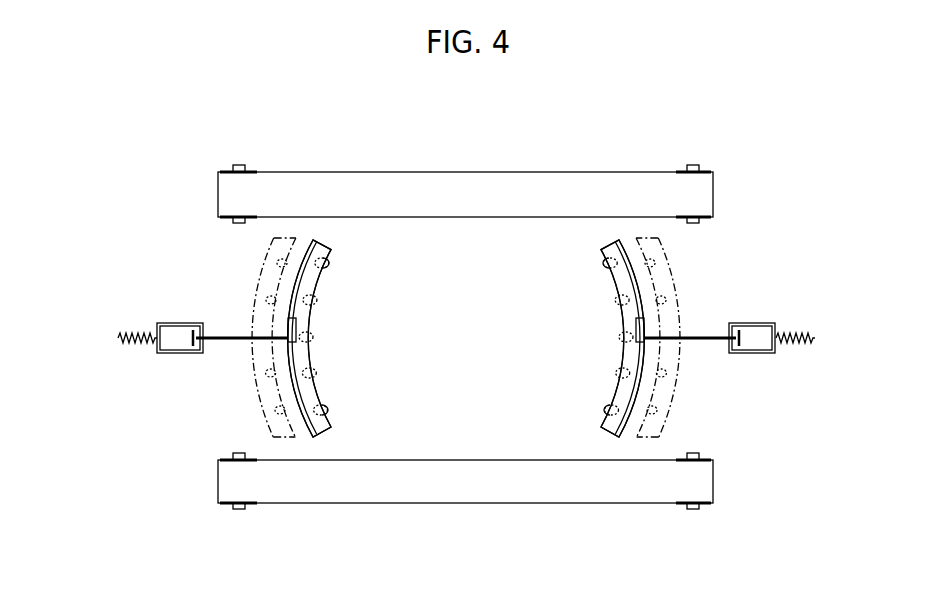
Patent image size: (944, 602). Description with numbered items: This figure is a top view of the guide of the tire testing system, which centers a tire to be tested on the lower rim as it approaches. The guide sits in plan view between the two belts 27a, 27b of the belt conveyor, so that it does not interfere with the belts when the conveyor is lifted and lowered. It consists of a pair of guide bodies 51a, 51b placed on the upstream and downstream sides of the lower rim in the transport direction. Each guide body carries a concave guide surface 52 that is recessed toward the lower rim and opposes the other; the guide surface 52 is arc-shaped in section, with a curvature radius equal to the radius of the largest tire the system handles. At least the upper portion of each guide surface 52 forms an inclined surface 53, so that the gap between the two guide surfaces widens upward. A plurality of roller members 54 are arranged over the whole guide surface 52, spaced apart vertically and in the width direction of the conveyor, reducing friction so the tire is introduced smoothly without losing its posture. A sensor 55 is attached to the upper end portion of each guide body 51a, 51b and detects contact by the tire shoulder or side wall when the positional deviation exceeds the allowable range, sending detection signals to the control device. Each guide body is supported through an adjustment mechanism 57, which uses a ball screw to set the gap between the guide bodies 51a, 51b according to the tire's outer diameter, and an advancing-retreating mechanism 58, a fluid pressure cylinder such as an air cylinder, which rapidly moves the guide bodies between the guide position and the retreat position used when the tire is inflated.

The belt 27a is at (473, 183).
The belt 27b is at (473, 491).
The guide body 51a is at (623, 440).
The guide body 51b is at (309, 440).
The guide surface 52 is at (318, 395).
The inclined surface 53 is at (327, 253).
The roller member 54 is at (322, 270).
The sensor 55 is at (288, 322).
The adjustment mechanism 57 is at (140, 332).
The advancing-retreating mechanism 58 is at (181, 323).